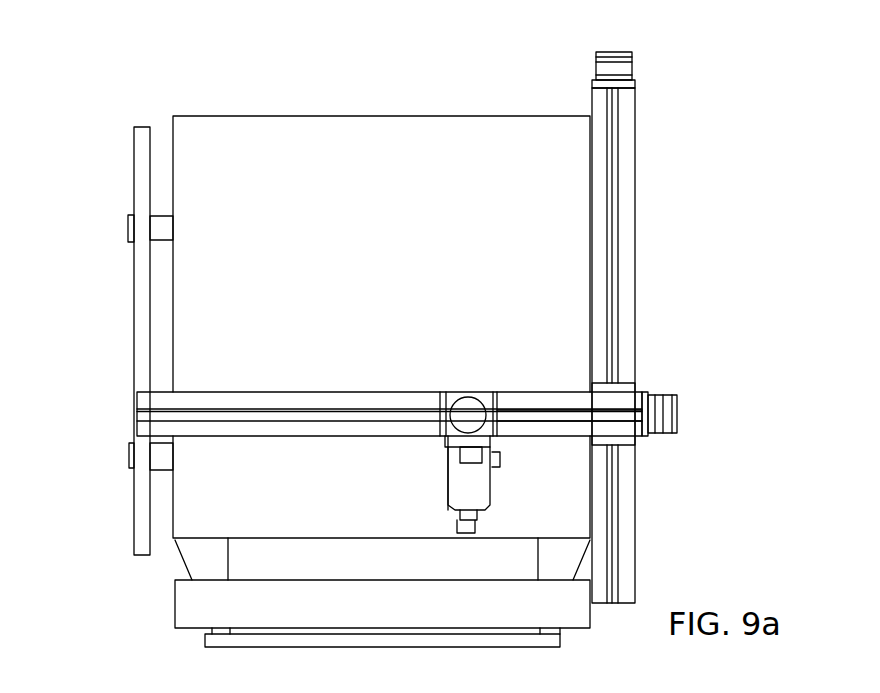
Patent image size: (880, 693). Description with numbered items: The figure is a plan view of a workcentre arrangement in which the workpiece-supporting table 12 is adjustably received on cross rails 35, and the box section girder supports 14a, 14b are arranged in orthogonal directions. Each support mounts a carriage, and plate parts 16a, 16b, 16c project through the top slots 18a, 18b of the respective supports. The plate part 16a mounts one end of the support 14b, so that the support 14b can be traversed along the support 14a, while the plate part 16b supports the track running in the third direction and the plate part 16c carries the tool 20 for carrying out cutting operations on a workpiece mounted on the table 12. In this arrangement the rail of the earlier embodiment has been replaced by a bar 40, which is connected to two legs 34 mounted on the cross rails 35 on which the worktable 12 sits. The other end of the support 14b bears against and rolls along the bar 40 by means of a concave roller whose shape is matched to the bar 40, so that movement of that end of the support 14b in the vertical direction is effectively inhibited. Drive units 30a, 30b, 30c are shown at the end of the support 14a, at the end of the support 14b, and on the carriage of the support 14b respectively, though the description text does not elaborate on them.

The table 12 is at (435, 142).
The support 14a is at (628, 190).
The support 14b is at (308, 400).
The plate part 16a is at (630, 385).
The plate part 16b is at (442, 392).
The plate part 16c is at (450, 443).
The top slot 18a is at (612, 245).
The top slot 18b is at (533, 415).
The tool 20 is at (483, 487).
The vertical drive motor 30a is at (632, 52).
The horizontal drive motor 30b is at (677, 430).
The carriage drive 30c is at (470, 408).
The leg 34 is at (128, 221).
The cross rail 35 is at (173, 218).
The bar 40 is at (138, 335).